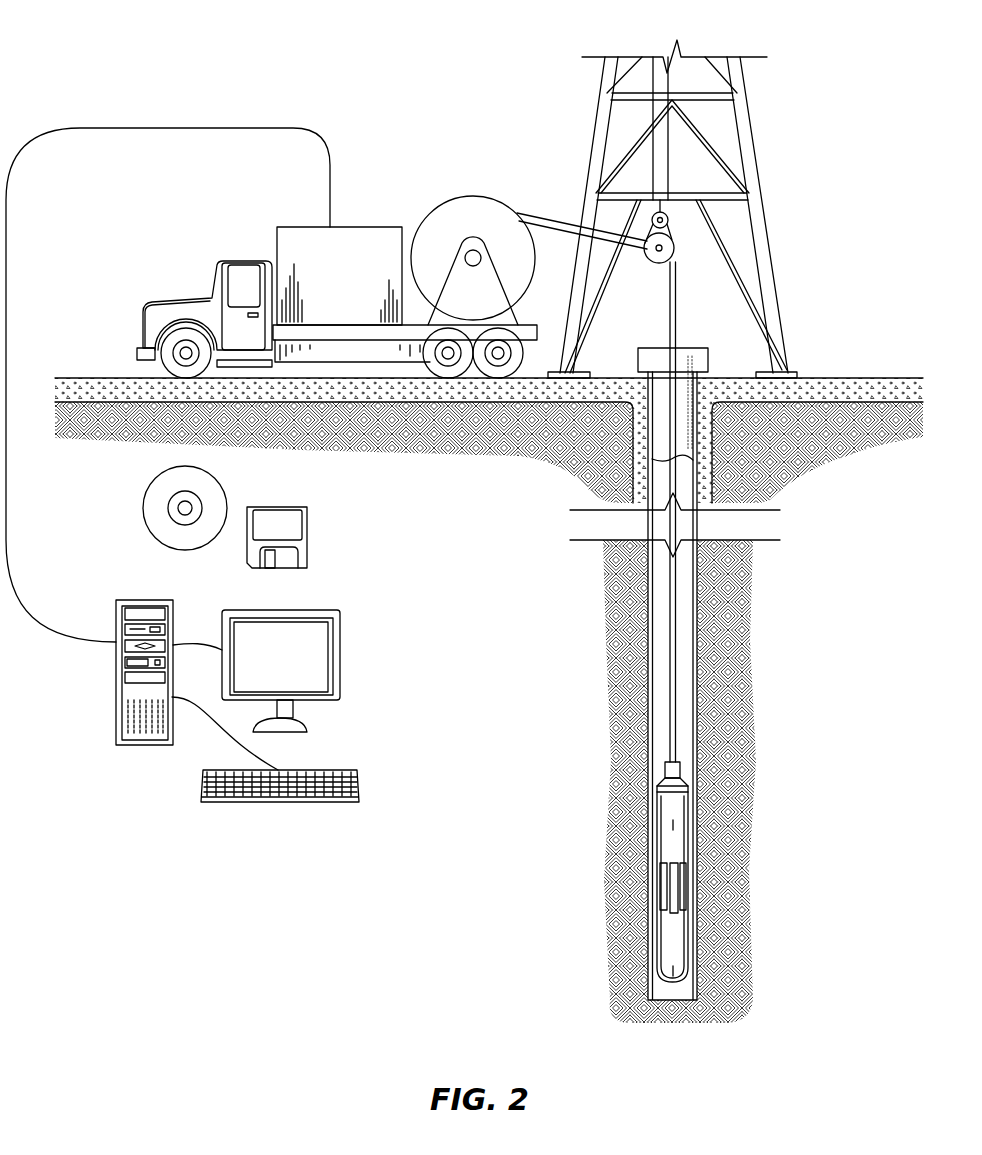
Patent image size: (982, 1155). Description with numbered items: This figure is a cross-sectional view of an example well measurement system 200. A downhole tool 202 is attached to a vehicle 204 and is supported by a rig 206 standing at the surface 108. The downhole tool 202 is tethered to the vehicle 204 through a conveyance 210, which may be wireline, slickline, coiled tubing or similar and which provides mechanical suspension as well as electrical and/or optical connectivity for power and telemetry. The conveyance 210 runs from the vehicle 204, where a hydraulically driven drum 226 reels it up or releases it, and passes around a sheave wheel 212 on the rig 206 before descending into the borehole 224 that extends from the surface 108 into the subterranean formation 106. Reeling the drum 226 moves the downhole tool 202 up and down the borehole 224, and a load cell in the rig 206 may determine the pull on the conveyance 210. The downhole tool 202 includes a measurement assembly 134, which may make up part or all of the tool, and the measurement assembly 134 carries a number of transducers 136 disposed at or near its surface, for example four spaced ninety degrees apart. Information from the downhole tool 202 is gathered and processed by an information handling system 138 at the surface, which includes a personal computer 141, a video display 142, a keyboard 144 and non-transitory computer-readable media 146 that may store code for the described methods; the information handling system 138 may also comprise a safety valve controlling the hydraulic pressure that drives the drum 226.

The well measurement system 200 is at (142, 50).
The vehicle 204 is at (350, 227).
The drum 226 is at (473, 196).
The rig 206 is at (770, 210).
The sheave wheel 212 is at (657, 265).
The surface 108 is at (833, 378).
The borehole 224 is at (772, 489).
The non-transitory computer-readable media 146 is at (207, 472).
The personal computer 141 is at (143, 600).
The video display 142 is at (278, 610).
The keyboard 144 is at (358, 783).
The information handling system 138 is at (247, 722).
The conveyance 210 is at (670, 630).
The subterranean formation 106 is at (872, 623).
The downhole tool 202 is at (670, 872).
The transducers 136 is at (660, 898).
The measurement assembly 134 is at (640, 980).